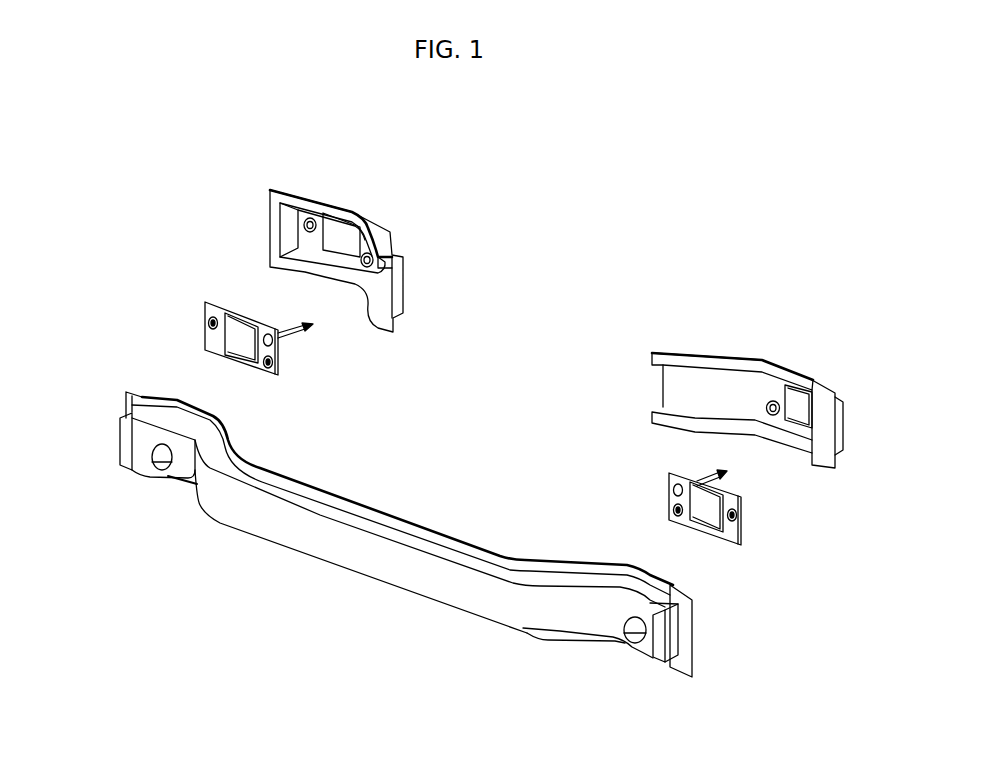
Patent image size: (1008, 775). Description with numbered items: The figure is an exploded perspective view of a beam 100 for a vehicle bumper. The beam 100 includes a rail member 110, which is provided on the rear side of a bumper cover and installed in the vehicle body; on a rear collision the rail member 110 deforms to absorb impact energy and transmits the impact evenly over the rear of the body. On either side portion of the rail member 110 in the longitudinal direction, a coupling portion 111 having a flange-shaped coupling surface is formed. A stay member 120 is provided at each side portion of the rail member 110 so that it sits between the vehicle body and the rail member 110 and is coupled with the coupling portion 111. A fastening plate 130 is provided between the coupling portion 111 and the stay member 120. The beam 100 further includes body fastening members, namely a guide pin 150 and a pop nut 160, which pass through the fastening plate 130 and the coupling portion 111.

The beam 100 is at (760, 232).
The rail member 110 is at (300, 540).
The coupling portion 111 is at (127, 392).
The stay member 120 is at (272, 212).
The fastening plate 130 is at (208, 339).
The guide pin 150 is at (303, 332).
The pop nut 160 is at (213, 323).